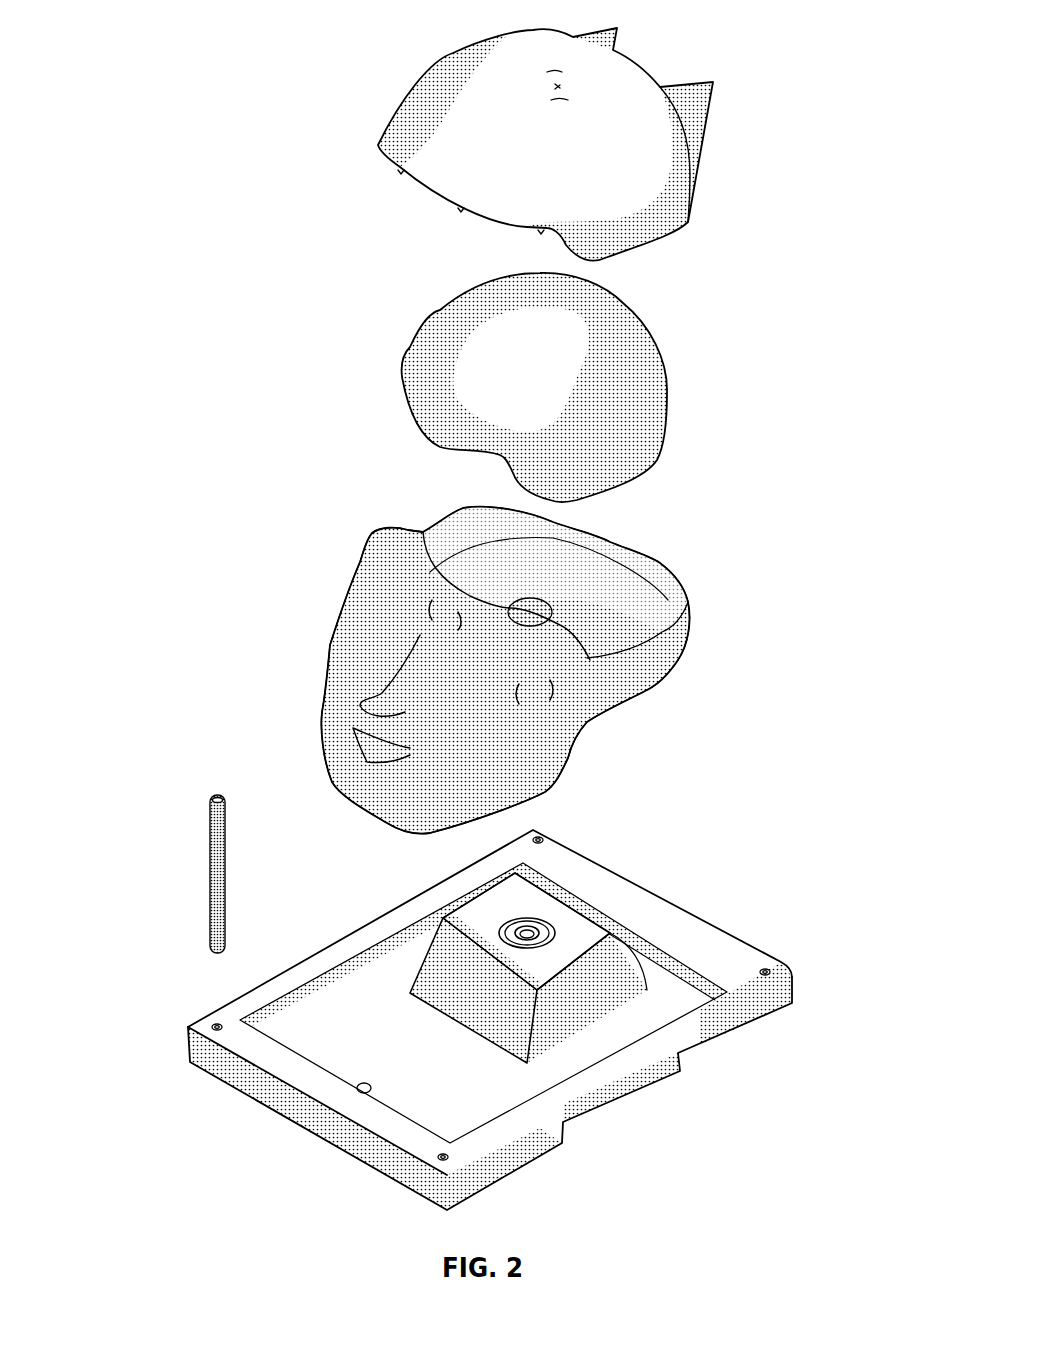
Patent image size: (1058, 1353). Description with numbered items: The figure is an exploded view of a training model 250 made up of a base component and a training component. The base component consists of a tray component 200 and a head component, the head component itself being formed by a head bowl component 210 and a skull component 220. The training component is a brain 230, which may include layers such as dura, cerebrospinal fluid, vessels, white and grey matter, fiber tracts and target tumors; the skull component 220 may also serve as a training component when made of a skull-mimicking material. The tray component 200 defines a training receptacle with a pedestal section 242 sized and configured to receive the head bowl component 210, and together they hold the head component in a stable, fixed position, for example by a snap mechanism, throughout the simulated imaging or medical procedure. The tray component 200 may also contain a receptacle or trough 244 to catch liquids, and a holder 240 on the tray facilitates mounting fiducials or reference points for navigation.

The tray component 200 is at (700, 918).
The head bowl component 210 is at (353, 638).
The skull component 220 is at (377, 145).
The brain 230 is at (402, 380).
The holder 240 is at (210, 878).
The pedestal section 242 is at (587, 995).
The receptacle or trough 244 is at (293, 1003).
The training model 250 is at (782, 537).